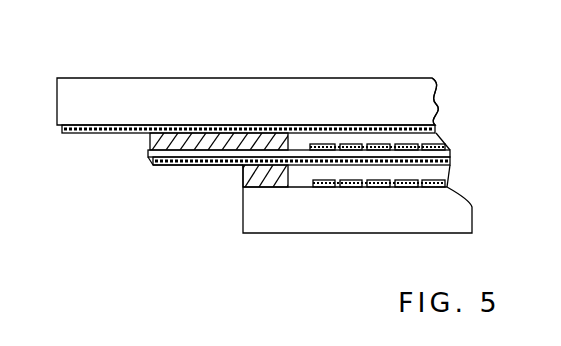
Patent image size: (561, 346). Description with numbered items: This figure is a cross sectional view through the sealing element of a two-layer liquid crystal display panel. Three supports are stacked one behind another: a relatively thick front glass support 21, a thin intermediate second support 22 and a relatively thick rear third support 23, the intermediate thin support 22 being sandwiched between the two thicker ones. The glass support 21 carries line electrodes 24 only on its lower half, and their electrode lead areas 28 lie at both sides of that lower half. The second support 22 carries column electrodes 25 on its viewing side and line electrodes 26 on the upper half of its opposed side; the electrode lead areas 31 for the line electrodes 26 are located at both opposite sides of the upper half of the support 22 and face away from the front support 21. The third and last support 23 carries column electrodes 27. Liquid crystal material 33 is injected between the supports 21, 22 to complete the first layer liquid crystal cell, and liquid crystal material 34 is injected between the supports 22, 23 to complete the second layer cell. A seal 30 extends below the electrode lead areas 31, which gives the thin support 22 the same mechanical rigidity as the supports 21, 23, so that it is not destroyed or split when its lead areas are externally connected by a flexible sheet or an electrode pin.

The glass support 21 is at (393, 93).
The second support 22 is at (447, 156).
The third support 23 is at (460, 222).
The line electrodes 24 is at (430, 118).
The column electrodes 25 is at (440, 142).
The line electrodes 26 is at (445, 161).
The column electrodes 27 is at (448, 182).
The electrode lead areas 28 is at (80, 133).
The seal 30 is at (200, 133).
The electrode lead areas 31 is at (183, 165).
The liquid crystal material 33 is at (322, 143).
The liquid crystal material 34 is at (345, 187).